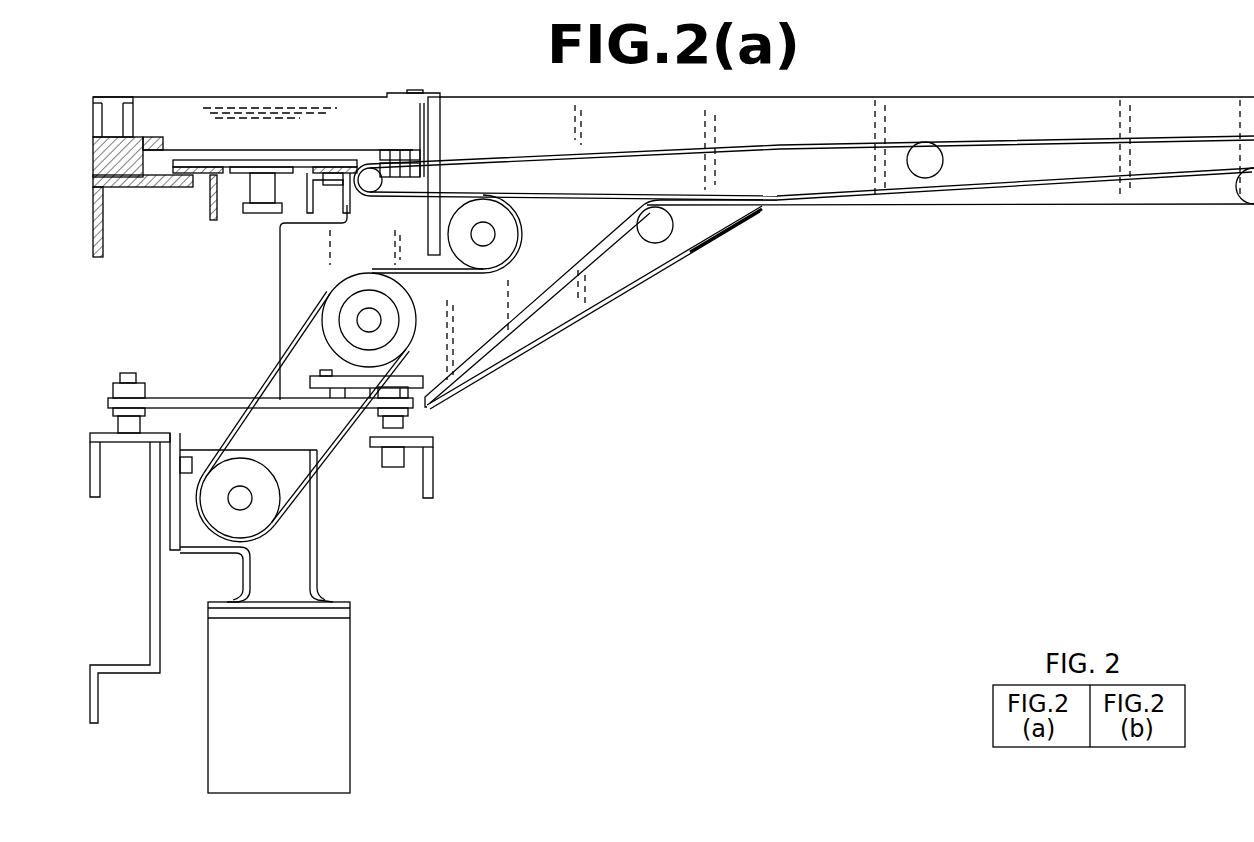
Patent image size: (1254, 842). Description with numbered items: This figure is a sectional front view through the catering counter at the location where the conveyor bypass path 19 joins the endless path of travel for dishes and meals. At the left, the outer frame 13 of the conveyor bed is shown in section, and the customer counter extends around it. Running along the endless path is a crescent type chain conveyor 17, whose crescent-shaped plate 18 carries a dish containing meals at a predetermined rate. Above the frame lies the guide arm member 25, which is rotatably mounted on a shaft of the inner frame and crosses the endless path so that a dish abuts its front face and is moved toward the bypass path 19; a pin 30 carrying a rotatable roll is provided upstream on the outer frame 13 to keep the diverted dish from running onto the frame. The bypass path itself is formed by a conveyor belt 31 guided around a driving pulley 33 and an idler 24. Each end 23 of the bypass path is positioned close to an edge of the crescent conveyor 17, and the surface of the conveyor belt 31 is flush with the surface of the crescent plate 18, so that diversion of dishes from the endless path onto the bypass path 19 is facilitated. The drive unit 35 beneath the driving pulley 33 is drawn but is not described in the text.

The outer frame 13 is at (133, 143).
The crescent type chain conveyor 17 is at (232, 225).
The crescent-shaped plate 18 is at (253, 160).
The conveyor bypass path 19 is at (1043, 140).
The end of the bypass path of travel 23 is at (358, 198).
The idler 24 is at (367, 177).
The guide arm member 25 is at (273, 97).
The pin 30 is at (107, 97).
The conveyor belt 31 is at (968, 183).
The driving pulley 33 is at (328, 298).
The motor 35 is at (343, 673).